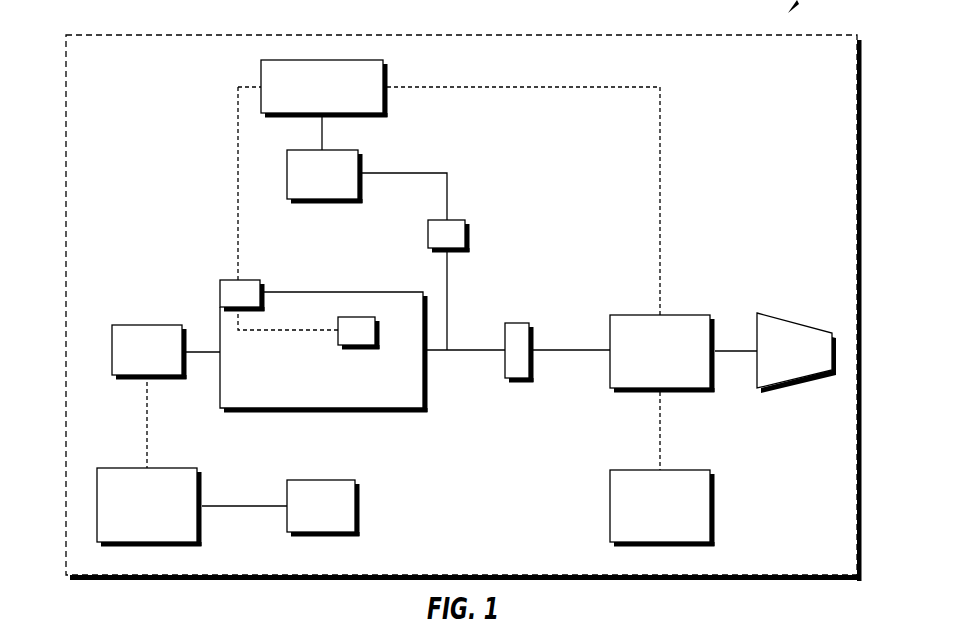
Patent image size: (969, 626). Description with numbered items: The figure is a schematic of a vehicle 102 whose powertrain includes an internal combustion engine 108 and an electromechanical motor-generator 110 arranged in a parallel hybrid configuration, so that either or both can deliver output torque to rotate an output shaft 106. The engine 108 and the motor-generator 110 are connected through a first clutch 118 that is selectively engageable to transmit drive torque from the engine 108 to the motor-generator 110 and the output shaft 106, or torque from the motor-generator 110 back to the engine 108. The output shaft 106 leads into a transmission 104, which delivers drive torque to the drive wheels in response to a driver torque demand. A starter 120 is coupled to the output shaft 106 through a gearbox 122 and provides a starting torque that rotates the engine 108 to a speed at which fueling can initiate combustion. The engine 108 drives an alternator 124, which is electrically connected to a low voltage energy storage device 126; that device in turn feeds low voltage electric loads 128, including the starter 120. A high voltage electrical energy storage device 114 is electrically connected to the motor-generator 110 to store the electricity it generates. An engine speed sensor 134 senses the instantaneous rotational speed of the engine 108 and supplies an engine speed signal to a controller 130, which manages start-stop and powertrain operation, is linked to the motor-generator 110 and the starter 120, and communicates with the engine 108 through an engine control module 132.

The vehicle 102 is at (463, 35).
The transmission 104 is at (774, 363).
The output shaft 106 is at (470, 354).
The internal combustion engine 108 is at (291, 368).
The motor-generator 110 is at (641, 363).
The high voltage electrical energy storage device 114 is at (610, 507).
The first clutch 118 is at (518, 323).
The starter 120 is at (303, 185).
The gearbox 122 is at (428, 232).
The alternator 124 is at (128, 363).
The low voltage energy storage device 126 is at (128, 518).
The low voltage electric loads 128 is at (302, 518).
The controller 130 is at (302, 100).
The engine control module 132 is at (232, 280).
The engine speed sensor 134 is at (355, 317).